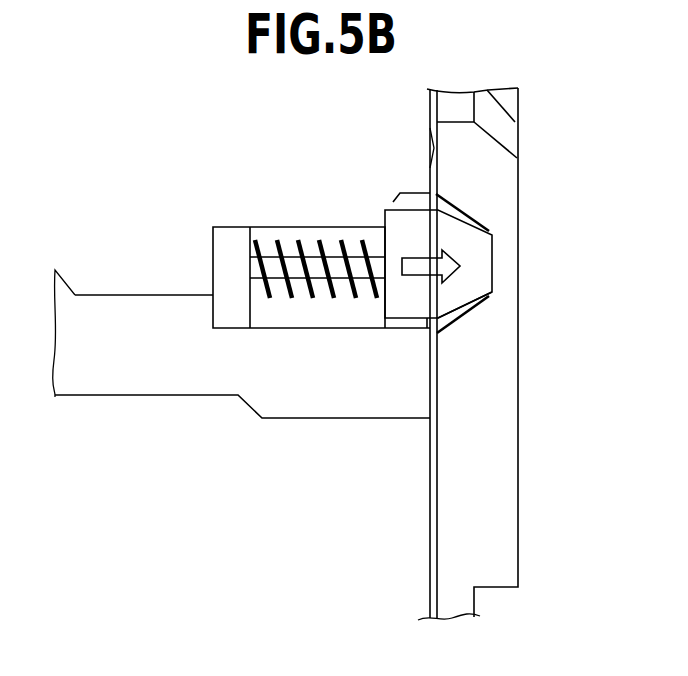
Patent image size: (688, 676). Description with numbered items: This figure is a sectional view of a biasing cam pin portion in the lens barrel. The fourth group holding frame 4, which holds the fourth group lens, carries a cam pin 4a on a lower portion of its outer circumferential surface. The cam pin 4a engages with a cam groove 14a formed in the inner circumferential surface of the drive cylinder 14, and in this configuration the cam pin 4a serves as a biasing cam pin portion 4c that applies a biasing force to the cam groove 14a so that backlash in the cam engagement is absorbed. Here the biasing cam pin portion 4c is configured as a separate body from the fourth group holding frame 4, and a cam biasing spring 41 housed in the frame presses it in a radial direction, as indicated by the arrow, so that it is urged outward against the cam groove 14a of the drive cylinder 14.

The fourth group holding frame 4 is at (143, 308).
The cam biasing spring 41 is at (310, 240).
The cam pin 4a is at (477, 248).
The biasing cam pin portion 4c is at (402, 303).
The drive cylinder 14 is at (497, 540).
The cam groove 14a is at (453, 210).